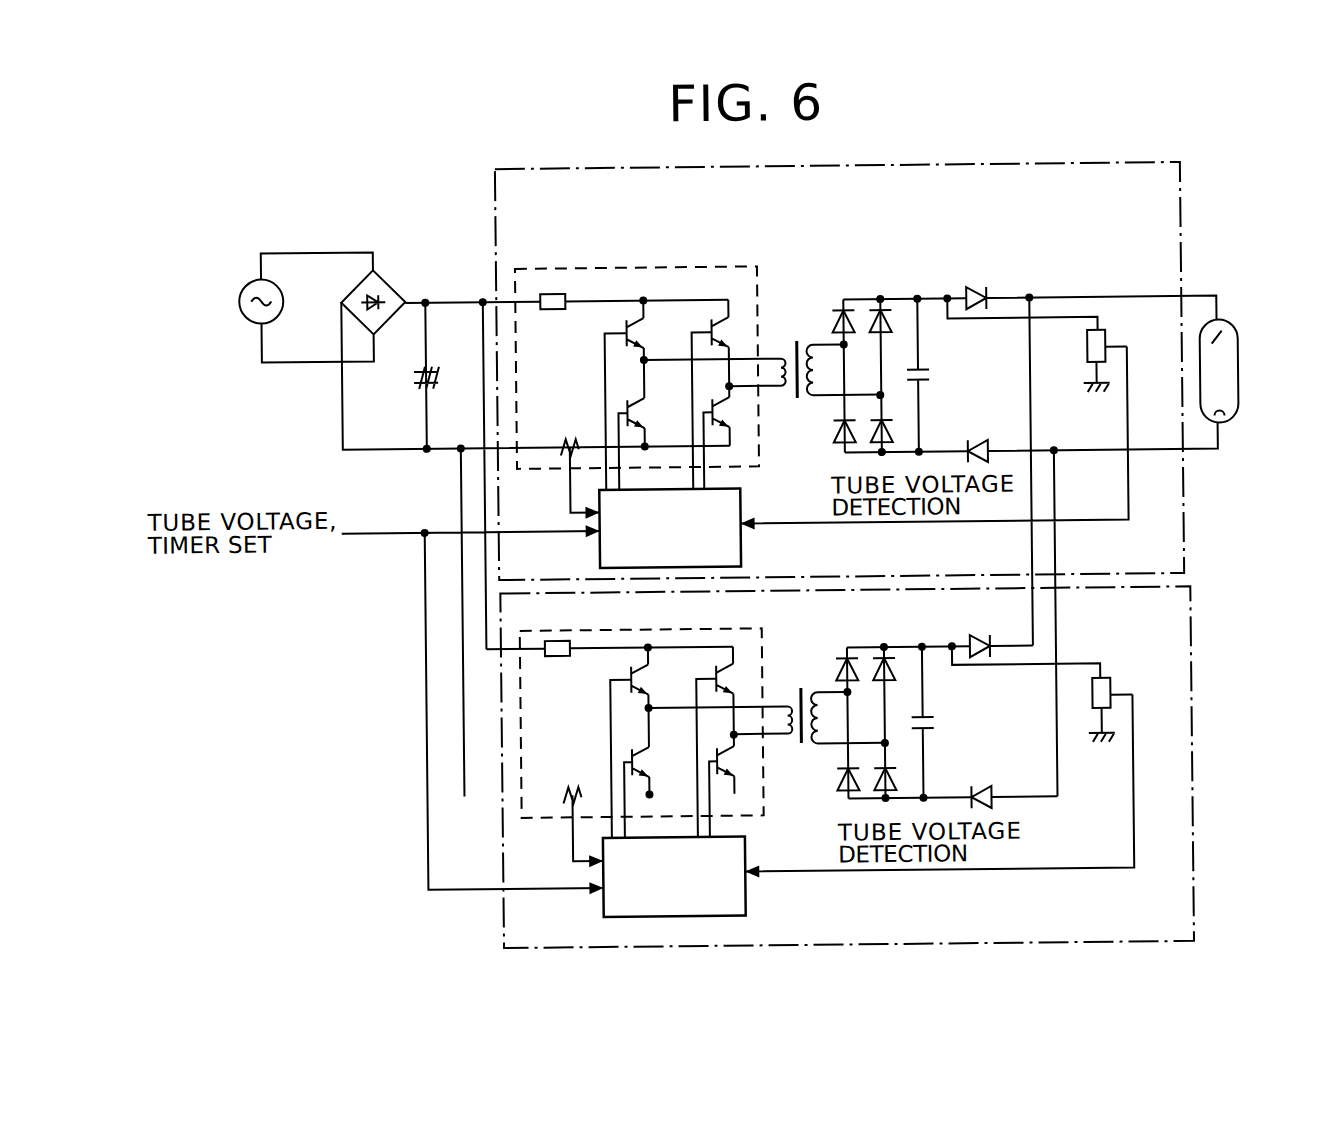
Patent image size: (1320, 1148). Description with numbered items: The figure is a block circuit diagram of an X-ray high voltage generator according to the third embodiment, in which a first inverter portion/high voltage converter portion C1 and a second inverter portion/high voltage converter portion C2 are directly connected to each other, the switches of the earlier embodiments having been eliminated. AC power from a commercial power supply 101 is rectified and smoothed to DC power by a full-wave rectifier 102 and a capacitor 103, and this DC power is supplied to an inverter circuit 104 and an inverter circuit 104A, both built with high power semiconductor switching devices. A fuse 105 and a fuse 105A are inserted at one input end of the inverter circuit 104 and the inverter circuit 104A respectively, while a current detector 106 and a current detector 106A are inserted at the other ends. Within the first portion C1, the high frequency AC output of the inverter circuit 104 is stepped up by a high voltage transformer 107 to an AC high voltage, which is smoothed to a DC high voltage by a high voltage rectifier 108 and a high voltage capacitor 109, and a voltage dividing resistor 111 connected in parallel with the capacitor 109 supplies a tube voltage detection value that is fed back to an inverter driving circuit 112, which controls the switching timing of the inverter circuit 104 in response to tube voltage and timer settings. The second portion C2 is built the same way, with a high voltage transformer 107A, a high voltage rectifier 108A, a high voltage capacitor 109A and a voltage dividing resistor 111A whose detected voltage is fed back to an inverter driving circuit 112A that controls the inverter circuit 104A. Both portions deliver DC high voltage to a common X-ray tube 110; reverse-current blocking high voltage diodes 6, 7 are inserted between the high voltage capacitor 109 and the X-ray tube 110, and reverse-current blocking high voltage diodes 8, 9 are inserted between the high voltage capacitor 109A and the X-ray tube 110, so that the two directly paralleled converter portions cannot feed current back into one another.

The commercial power supply 101 is at (242, 298).
The full-wave rectifier 102 is at (394, 286).
The capacitor 103 is at (418, 392).
The inverter circuit 104 is at (616, 267).
The fuse 105 is at (552, 292).
The current detector 106 is at (568, 440).
The high voltage transformer 107 is at (795, 341).
The high voltage rectifier 108 is at (853, 300).
The high voltage capacitor 109 is at (929, 372).
The X-ray tube 110 is at (1241, 364).
The voltage dividing resistor 111 is at (1107, 340).
The inverter driving circuit 112 is at (741, 541).
The reverse-current blocking high voltage diode 6 is at (970, 290).
The reverse-current blocking high voltage diode 7 is at (972, 443).
The reverse-current blocking high voltage diode 8 is at (975, 647).
The reverse-current blocking high voltage diode 9 is at (976, 792).
The fuse 105A is at (555, 639).
The inverter circuit 104A is at (709, 628).
The current detector 106A is at (566, 788).
The high voltage transformer 107A is at (798, 746).
The high voltage rectifier 108A is at (858, 649).
The high voltage capacitor 109A is at (932, 720).
The voltage dividing resistor 111A is at (1128, 661).
The inverter driving circuit 112A is at (742, 888).
The first inverter portion/high voltage converter portion C1 is at (950, 168).
The second inverter portion/high voltage converter portion C2 is at (961, 947).